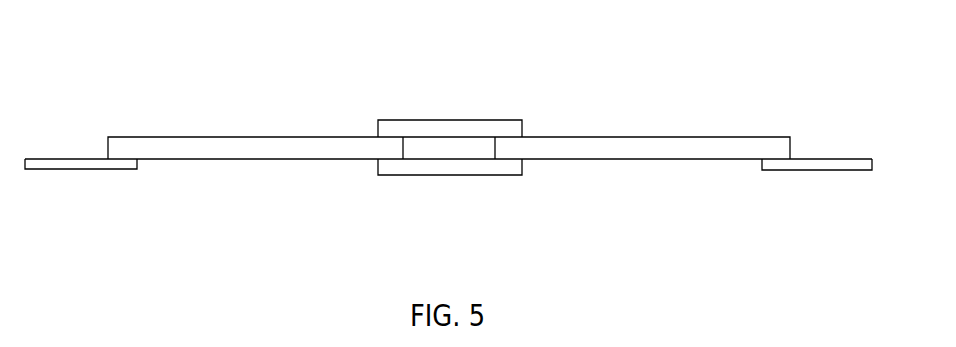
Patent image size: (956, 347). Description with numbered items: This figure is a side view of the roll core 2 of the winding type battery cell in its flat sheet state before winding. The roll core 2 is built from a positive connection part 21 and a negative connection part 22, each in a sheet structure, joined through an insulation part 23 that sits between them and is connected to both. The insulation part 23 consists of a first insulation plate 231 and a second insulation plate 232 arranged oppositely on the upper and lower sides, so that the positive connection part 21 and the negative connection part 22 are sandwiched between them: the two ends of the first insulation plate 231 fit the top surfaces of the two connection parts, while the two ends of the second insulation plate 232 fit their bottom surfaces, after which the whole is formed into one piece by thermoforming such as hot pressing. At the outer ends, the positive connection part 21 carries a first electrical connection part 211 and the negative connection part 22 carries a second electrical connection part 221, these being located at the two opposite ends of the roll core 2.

The roll core 2 is at (192, 86).
The positive connection part 21 is at (228, 152).
The first electrical connection part 211 is at (81, 166).
The negative connection part 22 is at (643, 156).
The second electrical connection part 221 is at (803, 170).
The insulation part 23 is at (388, 118).
The first insulation plate 231 is at (441, 120).
The second insulation plate 232 is at (440, 175).